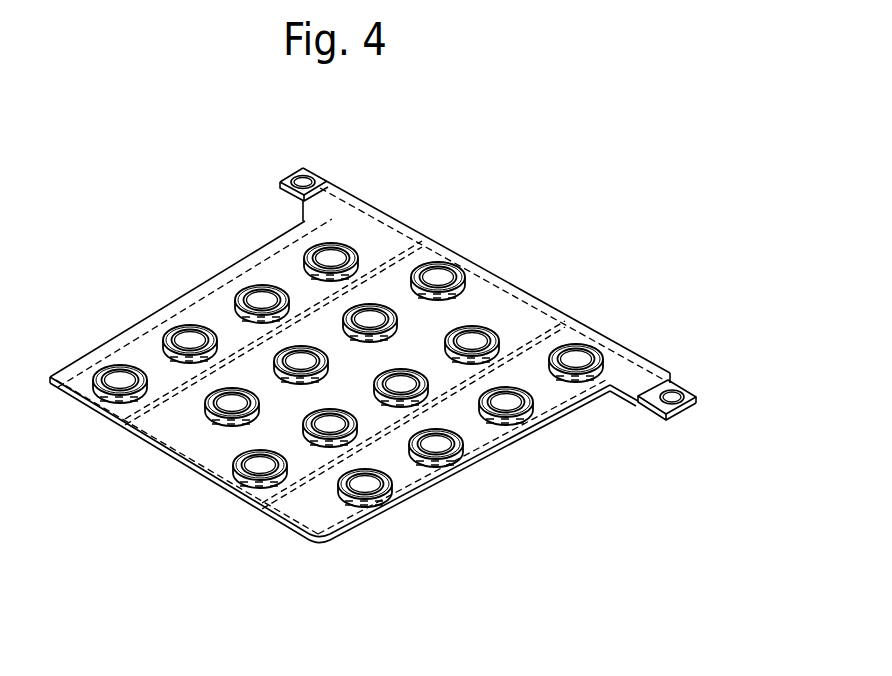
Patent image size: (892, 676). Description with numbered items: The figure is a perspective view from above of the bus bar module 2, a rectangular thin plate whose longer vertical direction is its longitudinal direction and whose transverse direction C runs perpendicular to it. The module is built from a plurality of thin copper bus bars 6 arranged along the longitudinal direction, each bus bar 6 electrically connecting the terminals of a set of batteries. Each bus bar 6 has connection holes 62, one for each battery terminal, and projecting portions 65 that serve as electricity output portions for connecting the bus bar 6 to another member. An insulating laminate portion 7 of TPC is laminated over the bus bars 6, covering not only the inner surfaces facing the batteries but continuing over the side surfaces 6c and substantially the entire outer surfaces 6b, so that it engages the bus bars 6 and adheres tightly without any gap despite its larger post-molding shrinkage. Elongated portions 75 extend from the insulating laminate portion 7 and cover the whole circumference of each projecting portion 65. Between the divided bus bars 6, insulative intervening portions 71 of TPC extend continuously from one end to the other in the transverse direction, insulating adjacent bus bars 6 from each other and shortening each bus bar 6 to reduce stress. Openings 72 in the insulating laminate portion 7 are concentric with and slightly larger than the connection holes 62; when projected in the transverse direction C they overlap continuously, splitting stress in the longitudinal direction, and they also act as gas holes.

The bus bar module 2 is at (401, 370).
The bus bar 6 is at (344, 389).
The outer surface 6b is at (210, 437).
The side surface 6c is at (301, 536).
The insulating laminate portion 7 is at (516, 271).
The connection hole 62 is at (378, 368).
The projecting portion 65 is at (312, 175).
The insulative intervening portion 71 is at (245, 347).
The opening 72 is at (512, 390).
The elongated portion 75 is at (348, 187).
The transverse direction C is at (493, 463).